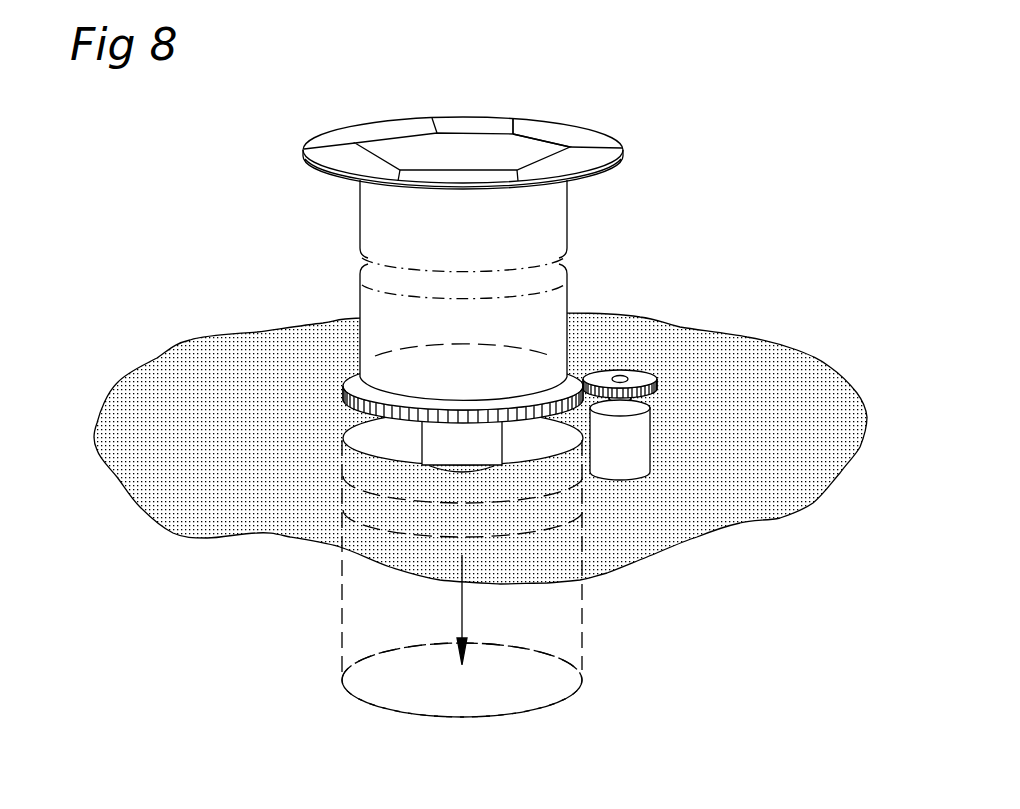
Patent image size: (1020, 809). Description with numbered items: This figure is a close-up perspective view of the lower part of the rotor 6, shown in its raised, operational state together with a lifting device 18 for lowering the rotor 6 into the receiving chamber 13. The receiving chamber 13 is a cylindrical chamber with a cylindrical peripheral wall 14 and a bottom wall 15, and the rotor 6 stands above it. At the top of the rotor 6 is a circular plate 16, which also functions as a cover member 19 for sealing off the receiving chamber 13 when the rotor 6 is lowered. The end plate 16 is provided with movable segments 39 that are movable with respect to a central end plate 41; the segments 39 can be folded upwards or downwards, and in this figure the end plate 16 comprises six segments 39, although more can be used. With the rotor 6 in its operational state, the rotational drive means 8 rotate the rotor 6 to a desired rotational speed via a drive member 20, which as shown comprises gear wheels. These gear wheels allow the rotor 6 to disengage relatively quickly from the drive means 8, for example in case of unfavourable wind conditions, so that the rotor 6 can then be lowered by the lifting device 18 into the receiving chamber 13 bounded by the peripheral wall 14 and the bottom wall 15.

The rotor 6 is at (333, 303).
The rotational drive means 8 is at (637, 435).
The receiving chamber 13 is at (333, 628).
The cylindrical peripheral wall 14 is at (582, 657).
The bottom wall 15 is at (523, 712).
The circular plate 16 is at (588, 108).
The lifting device 18 is at (540, 506).
The cover member 19 is at (632, 150).
The drive member 20 is at (578, 372).
The movable segments 39 is at (350, 131).
The central end plate 41 is at (518, 133).